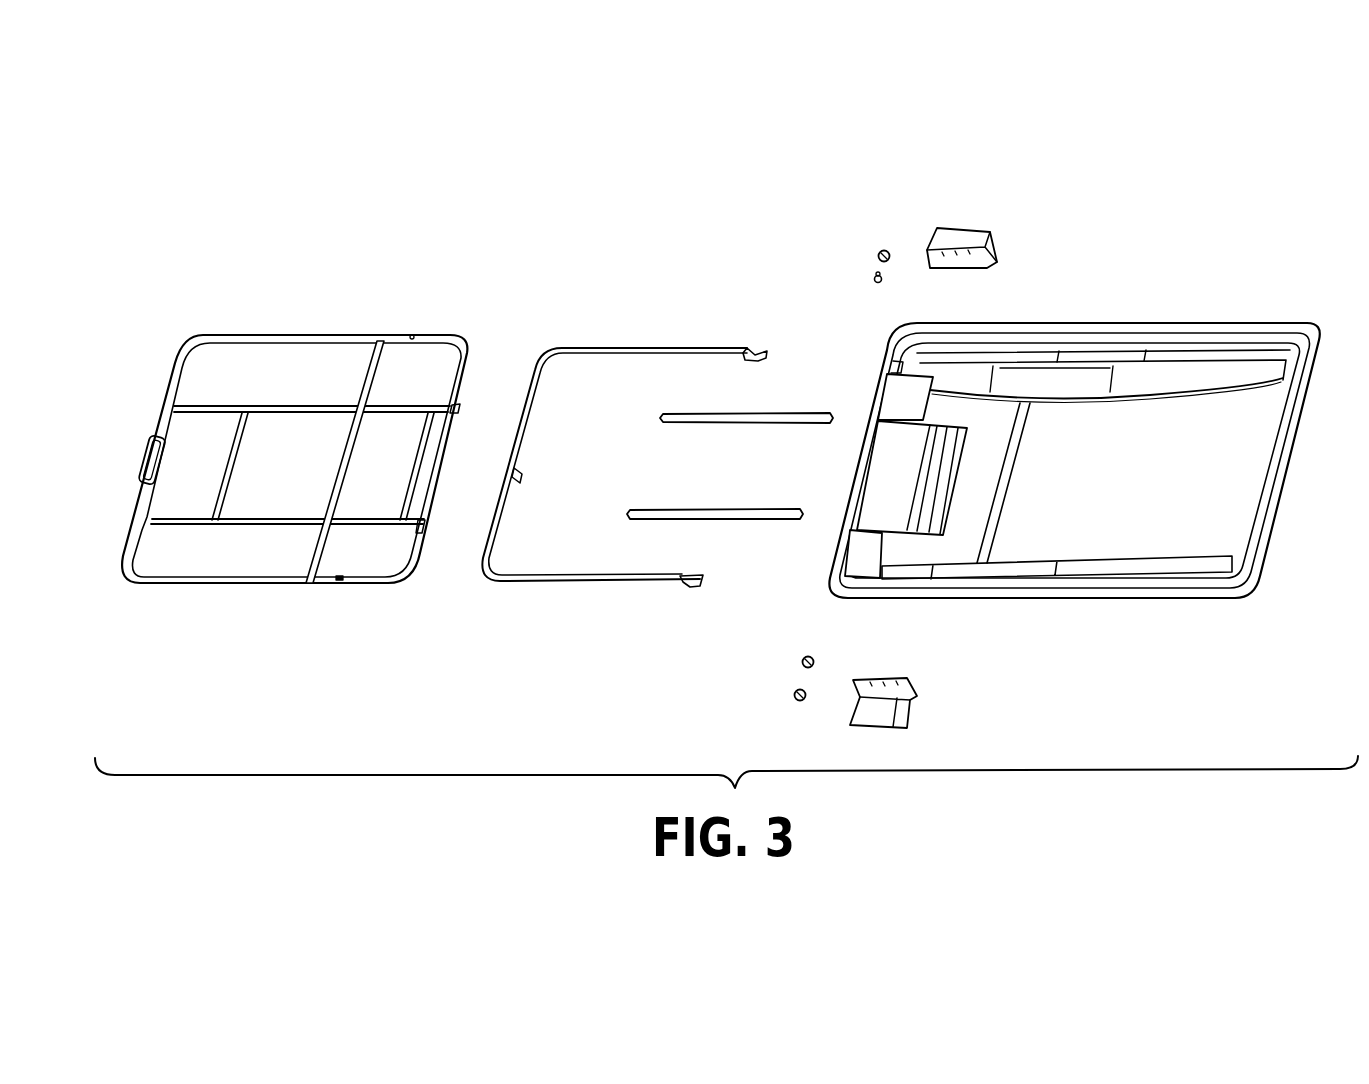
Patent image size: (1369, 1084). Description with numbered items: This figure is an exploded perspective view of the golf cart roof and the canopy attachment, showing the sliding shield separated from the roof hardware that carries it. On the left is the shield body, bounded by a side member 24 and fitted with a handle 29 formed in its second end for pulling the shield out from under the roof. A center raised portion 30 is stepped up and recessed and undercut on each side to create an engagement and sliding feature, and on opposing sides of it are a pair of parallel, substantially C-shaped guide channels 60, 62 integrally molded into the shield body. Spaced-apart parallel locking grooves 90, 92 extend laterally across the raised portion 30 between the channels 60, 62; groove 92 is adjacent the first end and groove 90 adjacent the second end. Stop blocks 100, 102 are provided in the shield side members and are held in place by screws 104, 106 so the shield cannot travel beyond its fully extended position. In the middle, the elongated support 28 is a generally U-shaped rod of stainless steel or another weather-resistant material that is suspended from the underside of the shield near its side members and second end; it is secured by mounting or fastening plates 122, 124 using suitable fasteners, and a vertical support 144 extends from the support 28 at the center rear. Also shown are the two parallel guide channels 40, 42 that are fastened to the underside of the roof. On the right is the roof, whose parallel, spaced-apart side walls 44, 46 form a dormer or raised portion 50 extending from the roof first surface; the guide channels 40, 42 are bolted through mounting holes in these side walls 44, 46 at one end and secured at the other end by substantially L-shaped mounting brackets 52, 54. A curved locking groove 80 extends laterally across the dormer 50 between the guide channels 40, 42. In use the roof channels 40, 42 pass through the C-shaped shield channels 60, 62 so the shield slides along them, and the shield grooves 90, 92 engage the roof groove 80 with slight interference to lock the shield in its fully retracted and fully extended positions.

The second side member 24 is at (360, 585).
The elongated support 28 is at (640, 353).
The handle 29 is at (146, 451).
The center raised portion 30 is at (319, 428).
The first guide channel 40 is at (770, 418).
The second guide channel 42 is at (700, 513).
The first side wall 44 is at (898, 433).
The second side wall 46 is at (878, 530).
The dormer or raised portion 50 is at (900, 475).
The first mounting bracket 52 is at (987, 235).
The second mounting bracket 54 is at (917, 690).
The first shield guide channel 60 is at (458, 407).
The second shield guide channel 62 is at (419, 533).
The locking groove 80 is at (926, 462).
The first locking groove 90 is at (234, 453).
The second locking groove 92 is at (422, 449).
The first stop block 100 is at (879, 252).
The second stop block 102 is at (795, 694).
The first screw 104 is at (872, 278).
The second screw 106 is at (803, 660).
The first fastening plate 122 is at (762, 350).
The second fastening plate 124 is at (690, 585).
The vertical support 144 is at (530, 470).